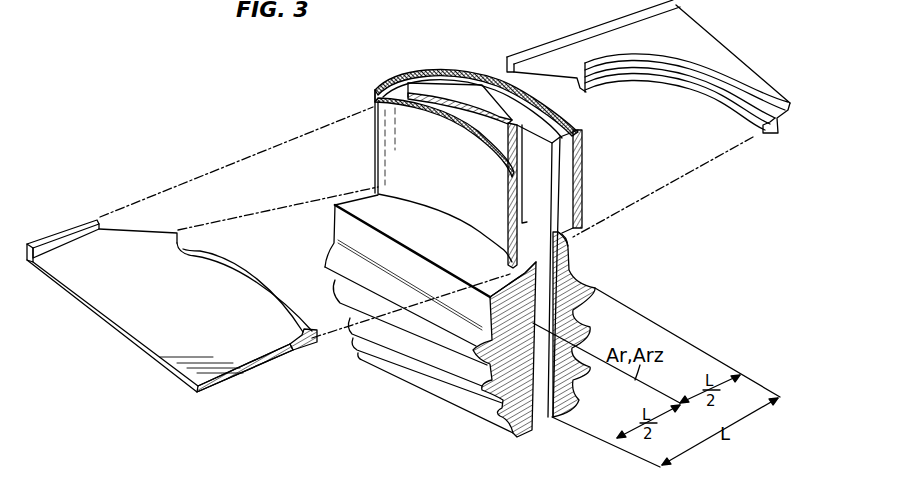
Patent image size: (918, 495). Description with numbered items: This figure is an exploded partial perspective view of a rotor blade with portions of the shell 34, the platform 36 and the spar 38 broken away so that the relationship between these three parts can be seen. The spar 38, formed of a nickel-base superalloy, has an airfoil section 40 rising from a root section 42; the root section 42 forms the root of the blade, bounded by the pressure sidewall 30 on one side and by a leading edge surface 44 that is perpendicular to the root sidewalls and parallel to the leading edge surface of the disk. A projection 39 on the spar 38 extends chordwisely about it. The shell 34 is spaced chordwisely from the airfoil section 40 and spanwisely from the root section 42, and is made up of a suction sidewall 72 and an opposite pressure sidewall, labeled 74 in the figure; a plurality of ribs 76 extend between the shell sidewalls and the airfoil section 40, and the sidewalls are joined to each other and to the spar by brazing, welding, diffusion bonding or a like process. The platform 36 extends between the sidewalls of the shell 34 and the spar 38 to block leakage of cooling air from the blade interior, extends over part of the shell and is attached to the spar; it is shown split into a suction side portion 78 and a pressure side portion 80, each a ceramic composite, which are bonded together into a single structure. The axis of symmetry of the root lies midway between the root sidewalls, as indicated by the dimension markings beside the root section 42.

The pressure sidewall 30 is at (332, 250).
The shell 34 is at (584, 172).
The platform 36 is at (152, 362).
The spar 38 is at (596, 288).
The projection 39 is at (543, 249).
The airfoil section 40 is at (545, 181).
The root section 42 is at (519, 342).
The leading edge surface 44 is at (374, 186).
The suction sidewall 72 is at (428, 75).
The cylindrical wall 74 is at (458, 181).
The ribs 76 is at (497, 123).
The suction side portion 78 is at (683, 32).
The pressure side portion 80 is at (222, 272).